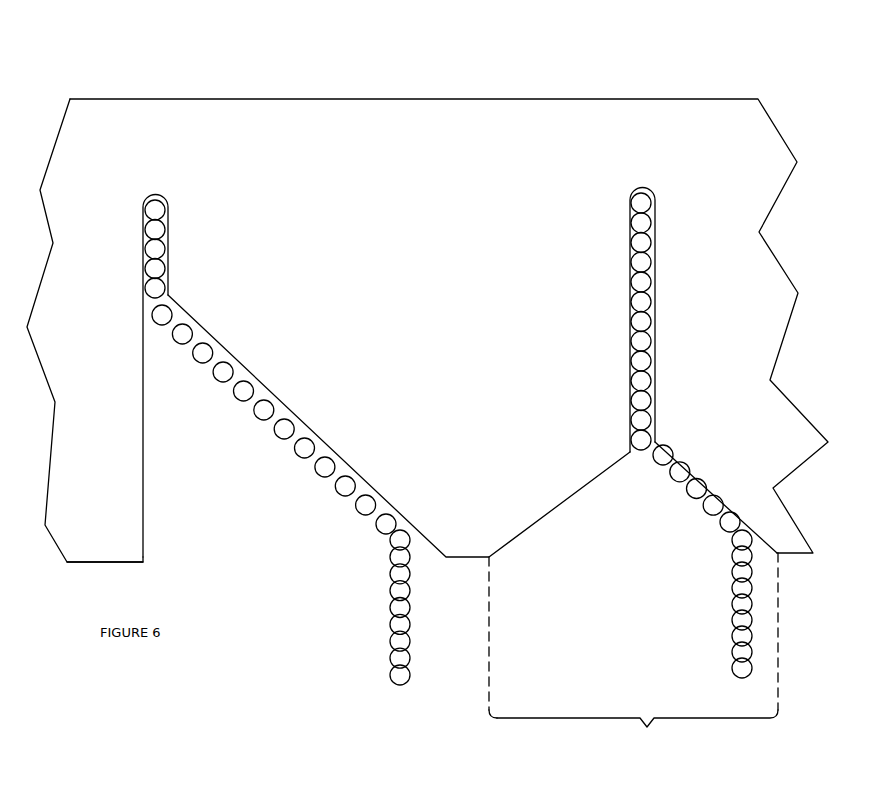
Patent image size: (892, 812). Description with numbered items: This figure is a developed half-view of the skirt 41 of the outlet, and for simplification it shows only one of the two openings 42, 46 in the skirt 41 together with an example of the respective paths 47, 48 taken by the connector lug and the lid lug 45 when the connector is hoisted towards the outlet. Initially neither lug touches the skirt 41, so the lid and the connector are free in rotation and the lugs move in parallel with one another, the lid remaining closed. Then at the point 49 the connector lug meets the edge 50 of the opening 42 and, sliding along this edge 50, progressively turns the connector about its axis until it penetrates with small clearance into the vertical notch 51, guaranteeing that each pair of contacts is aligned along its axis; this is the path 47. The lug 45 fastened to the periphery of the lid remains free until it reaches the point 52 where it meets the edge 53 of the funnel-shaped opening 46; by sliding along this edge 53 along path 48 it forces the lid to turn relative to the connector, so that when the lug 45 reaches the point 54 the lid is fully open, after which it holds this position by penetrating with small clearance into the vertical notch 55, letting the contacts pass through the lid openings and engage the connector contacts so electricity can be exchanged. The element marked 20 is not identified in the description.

The skirt 41 is at (427, 285).
The vertical notch 55 is at (435, 476).
The point 54 is at (177, 249).
The edge 53 is at (399, 426).
The point 52 is at (274, 419).
The vertical notch 51 is at (663, 320).
The edge 50 is at (716, 497).
The point 49 is at (714, 488).
The path 48 is at (364, 599).
The path 47 is at (703, 596).
The funnel-shaped opening 46 is at (183, 601).
The lug 45 is at (356, 699).
The opening 42 is at (633, 622).
The bottom ball of right chain 20 is at (708, 669).